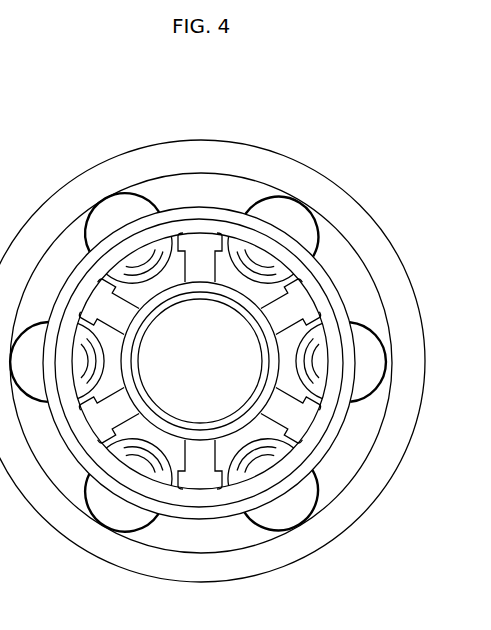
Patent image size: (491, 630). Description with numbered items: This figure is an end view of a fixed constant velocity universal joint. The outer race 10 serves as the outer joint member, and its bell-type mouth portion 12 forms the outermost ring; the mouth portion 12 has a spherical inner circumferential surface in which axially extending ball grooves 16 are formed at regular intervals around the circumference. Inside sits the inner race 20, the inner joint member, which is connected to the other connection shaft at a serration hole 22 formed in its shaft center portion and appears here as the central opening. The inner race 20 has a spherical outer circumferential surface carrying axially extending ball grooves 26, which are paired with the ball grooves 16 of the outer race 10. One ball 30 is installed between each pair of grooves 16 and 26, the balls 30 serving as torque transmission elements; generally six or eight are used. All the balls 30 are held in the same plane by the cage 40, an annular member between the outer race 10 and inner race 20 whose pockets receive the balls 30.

The outer race 10 is at (322, 159).
The mouth portion 12 is at (192, 156).
The ball grooves 16 is at (275, 187).
The inner race 20 is at (203, 426).
The serration hole 22 is at (144, 348).
The ball grooves 26 is at (249, 260).
The balls 30 is at (112, 208).
The cage 40 is at (338, 291).